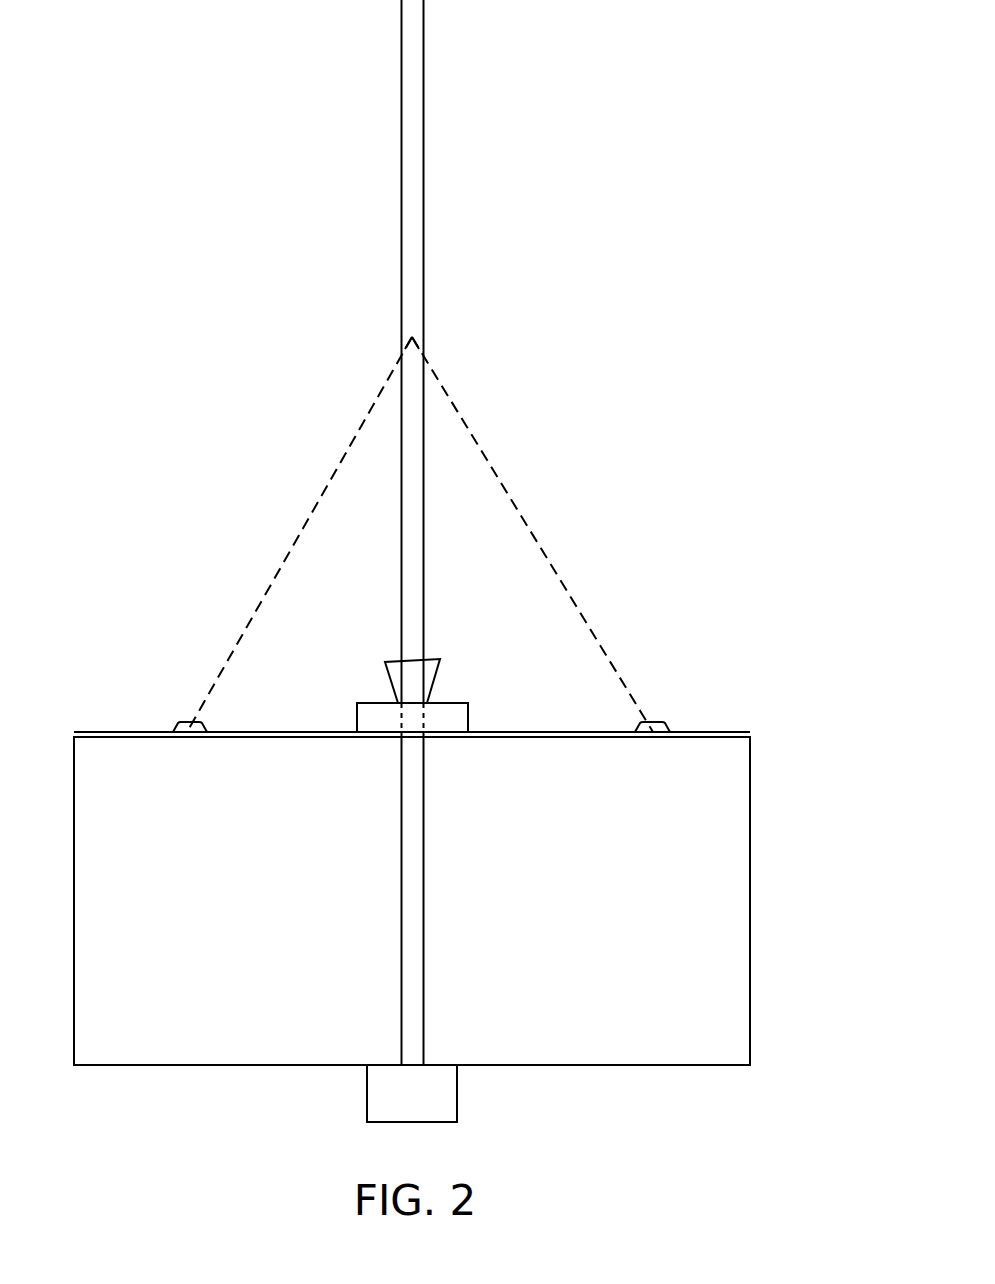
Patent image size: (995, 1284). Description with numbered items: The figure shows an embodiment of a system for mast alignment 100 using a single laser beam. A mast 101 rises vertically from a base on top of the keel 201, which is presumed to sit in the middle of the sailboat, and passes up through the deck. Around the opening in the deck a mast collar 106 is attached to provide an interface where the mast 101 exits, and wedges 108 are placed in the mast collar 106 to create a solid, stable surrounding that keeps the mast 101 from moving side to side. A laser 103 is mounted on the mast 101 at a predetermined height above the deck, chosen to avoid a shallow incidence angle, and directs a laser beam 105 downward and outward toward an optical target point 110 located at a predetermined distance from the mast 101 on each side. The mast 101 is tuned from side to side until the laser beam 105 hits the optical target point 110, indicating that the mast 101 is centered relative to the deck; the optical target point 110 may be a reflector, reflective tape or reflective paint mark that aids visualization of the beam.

The system for mast alignment 100 is at (246, 242).
The mast 101 is at (413, 145).
The laser 103 is at (415, 337).
The laser beam 105 is at (343, 458).
The mast collar 106 is at (455, 710).
The wedges 108 is at (430, 672).
The optical target point 110 is at (185, 723).
The keel 201 is at (391, 1107).